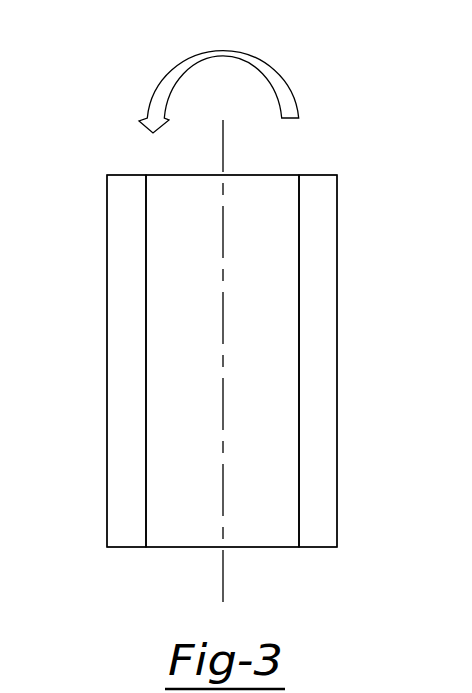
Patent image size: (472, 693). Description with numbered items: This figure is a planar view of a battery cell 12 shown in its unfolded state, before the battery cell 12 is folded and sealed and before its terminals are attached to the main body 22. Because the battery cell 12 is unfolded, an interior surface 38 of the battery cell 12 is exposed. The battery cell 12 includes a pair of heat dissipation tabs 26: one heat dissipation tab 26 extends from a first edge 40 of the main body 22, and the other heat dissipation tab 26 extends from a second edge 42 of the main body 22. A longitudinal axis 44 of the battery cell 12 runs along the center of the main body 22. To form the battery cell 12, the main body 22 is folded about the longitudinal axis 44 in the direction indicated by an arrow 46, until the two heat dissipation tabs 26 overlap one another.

The battery cell 12 is at (150, 65).
The main body 22 is at (155, 172).
The heat dissipation tabs 26 is at (117, 330).
The interior surface 38 is at (270, 354).
The first edge 40 is at (146, 274).
The second edge 42 is at (299, 243).
The longitudinal axis 44 is at (223, 152).
The arrow 46 is at (273, 63).